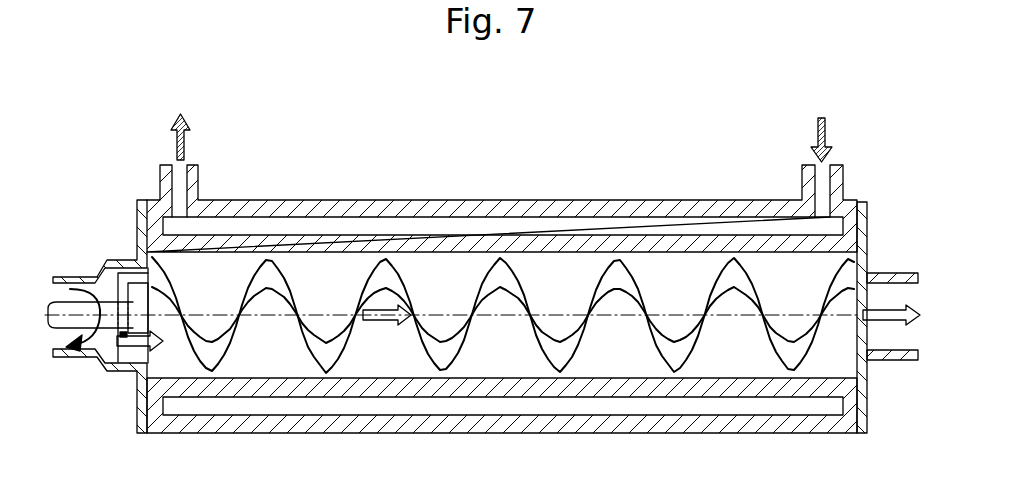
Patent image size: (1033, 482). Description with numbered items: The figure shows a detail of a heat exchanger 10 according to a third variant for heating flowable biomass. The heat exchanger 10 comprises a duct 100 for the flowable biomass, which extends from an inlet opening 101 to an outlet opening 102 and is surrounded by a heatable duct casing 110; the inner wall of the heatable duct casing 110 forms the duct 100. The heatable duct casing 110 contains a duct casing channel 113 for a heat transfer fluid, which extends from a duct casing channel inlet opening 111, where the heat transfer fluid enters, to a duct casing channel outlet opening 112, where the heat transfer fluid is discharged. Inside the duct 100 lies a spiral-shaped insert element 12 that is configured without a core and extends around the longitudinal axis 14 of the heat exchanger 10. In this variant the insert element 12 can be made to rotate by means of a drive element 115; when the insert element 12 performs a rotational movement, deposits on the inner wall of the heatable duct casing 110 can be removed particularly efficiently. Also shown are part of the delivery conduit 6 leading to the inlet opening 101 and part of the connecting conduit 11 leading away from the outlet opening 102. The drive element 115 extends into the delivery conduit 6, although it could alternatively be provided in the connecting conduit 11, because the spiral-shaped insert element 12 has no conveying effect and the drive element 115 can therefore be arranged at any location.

The heat exchanger 10 is at (460, 254).
The duct 100 is at (428, 297).
The inlet opening 101 is at (112, 345).
The outlet opening 102 is at (882, 333).
The connecting conduit 11 is at (893, 272).
The heatable duct casing 110 is at (235, 205).
The duct casing channel inlet opening 111 is at (825, 188).
The duct casing channel outlet opening 112 is at (182, 188).
The duct casing channel 113 is at (327, 228).
The drive element 115 is at (67, 313).
The insert element 12 is at (605, 290).
The longitudinal axis 14 is at (676, 305).
The delivery conduit 6 is at (120, 263).